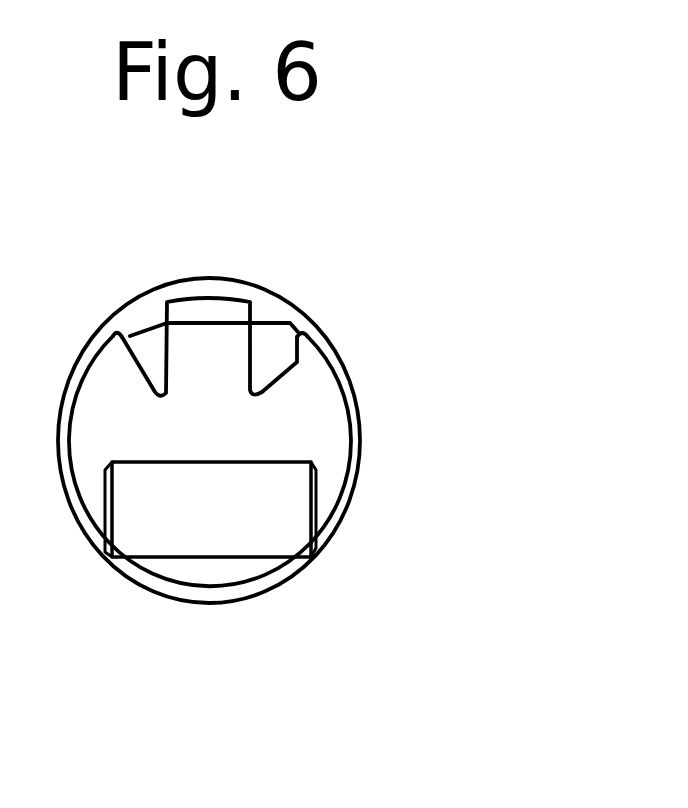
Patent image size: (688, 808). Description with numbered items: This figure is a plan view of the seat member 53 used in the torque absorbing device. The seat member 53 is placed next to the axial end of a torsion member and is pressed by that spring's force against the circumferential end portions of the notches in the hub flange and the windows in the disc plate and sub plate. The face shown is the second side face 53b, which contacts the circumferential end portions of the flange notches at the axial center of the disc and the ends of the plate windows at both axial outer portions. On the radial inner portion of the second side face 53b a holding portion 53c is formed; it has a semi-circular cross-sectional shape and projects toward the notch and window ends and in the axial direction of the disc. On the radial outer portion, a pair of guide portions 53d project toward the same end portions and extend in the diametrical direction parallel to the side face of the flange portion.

The seat member 53 is at (325, 322).
The second side face 53b is at (283, 433).
The holding portion 53c is at (283, 508).
The guide portion 53d is at (143, 343).